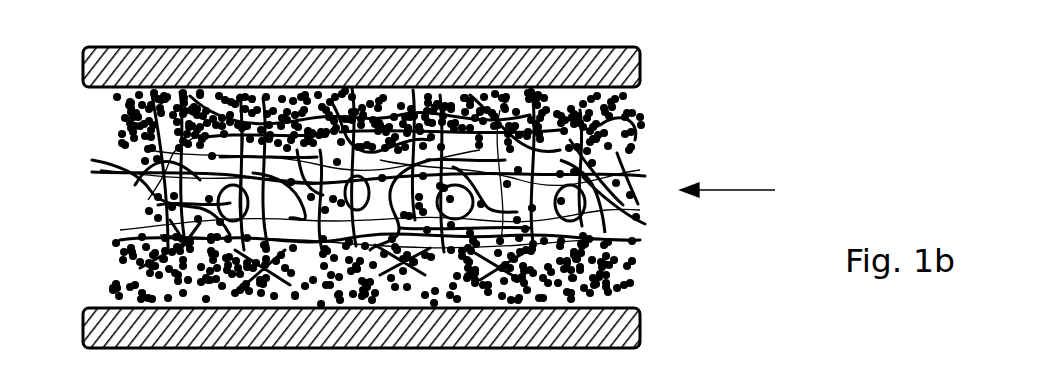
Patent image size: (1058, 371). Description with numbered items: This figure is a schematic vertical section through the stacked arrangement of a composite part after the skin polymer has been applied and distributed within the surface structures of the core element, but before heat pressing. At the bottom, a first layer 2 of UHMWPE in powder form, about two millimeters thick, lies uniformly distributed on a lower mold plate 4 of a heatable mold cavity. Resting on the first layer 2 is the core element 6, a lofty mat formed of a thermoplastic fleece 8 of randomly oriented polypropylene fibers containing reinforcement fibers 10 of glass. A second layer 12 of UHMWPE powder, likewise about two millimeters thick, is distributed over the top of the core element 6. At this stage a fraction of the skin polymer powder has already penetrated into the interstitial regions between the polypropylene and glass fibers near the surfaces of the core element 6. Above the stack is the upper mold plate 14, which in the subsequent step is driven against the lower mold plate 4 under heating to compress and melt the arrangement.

The first layer 2 is at (612, 292).
The lower mold plate 4 is at (578, 329).
The core element 6 is at (741, 189).
The thermoplastic fleece 8 is at (605, 234).
The reinforcement fibers 10 is at (148, 200).
The second layer 12 is at (615, 109).
The upper mold plate 14 is at (640, 63).